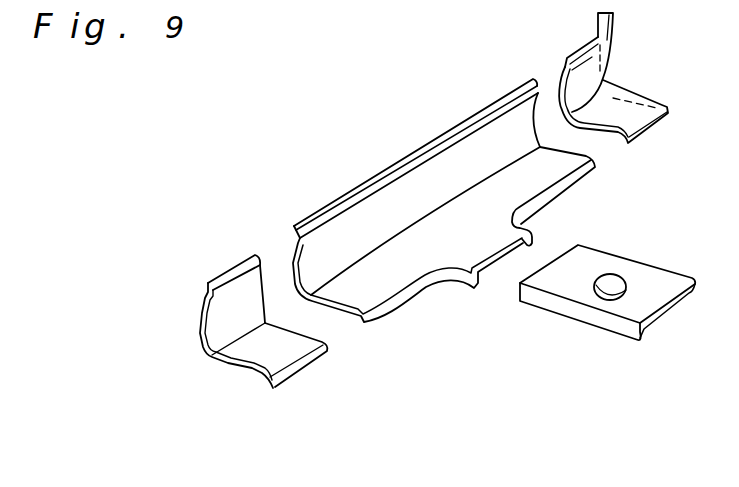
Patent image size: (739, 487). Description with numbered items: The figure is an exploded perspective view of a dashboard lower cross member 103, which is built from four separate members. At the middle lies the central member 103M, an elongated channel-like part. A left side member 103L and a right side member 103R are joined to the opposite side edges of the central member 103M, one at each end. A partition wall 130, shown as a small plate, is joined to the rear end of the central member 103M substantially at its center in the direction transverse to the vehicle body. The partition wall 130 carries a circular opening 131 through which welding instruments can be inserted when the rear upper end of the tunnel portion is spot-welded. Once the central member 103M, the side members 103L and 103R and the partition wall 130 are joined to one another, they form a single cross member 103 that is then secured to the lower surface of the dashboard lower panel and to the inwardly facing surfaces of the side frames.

The dashboard lower cross member 103 is at (410, 127).
The central member 103M is at (375, 177).
The left side member 103L is at (200, 332).
The right side member 103R is at (588, 45).
The partition wall 130 is at (543, 306).
The circular opening 131 is at (608, 294).